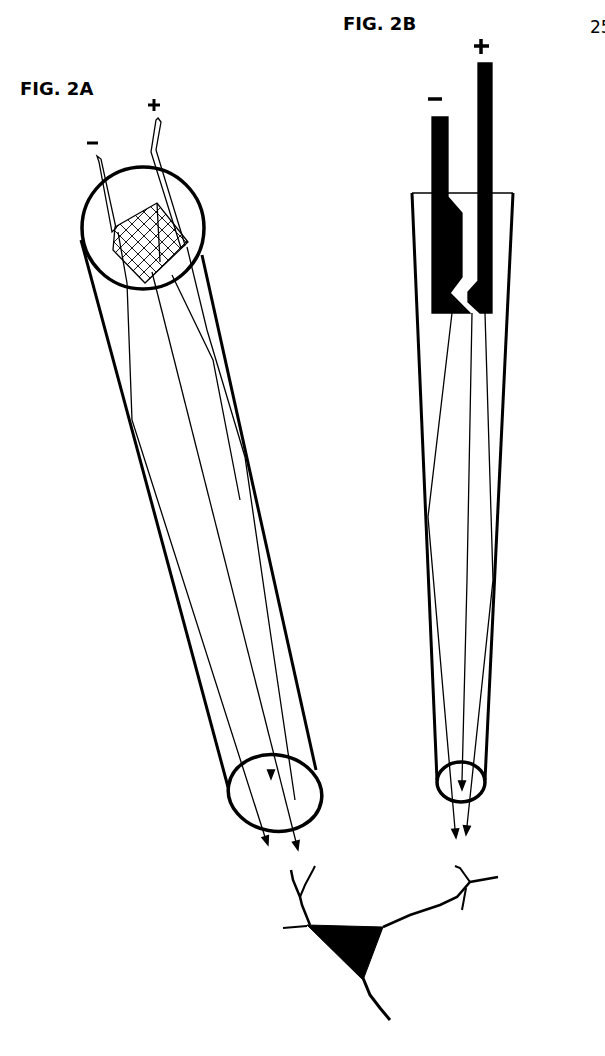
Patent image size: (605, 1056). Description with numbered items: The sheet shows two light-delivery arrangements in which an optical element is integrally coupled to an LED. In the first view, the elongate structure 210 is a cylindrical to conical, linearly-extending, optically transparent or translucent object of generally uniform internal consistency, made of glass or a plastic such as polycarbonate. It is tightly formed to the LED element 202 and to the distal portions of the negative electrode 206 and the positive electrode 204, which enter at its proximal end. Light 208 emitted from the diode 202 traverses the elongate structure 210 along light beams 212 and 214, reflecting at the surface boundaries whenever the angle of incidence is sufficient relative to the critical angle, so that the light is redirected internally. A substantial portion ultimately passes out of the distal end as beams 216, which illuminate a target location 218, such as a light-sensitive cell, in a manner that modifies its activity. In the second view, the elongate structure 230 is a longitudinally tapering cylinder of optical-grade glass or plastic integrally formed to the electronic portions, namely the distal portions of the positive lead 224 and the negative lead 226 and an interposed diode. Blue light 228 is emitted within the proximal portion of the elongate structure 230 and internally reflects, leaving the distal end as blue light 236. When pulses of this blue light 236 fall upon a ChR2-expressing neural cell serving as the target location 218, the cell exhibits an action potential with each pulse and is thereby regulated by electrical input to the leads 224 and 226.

In FIG. 2A, the LED element 202 is at (163, 212).
In FIG. 2A, the positive electrode 204 is at (163, 125).
In FIG. 2A, the negative electrode 206 is at (97, 160).
In FIG. 2A, the light 208 is at (128, 345).
In FIG. 2A, the elongate structure 210 is at (171, 503).
In FIG. 2A, the light beam 212 is at (132, 420).
In FIG. 2A, the light beam 214 is at (245, 457).
In FIG. 2A, the beams 216 is at (252, 782).
In FIG. 2A, the target location 218 is at (350, 918).
In FIG. 2B, the positive lead 224 is at (497, 140).
In FIG. 2B, the negative lead 226 is at (428, 142).
In FIG. 2B, the blue light 228 is at (433, 463).
In FIG. 2B, the elongate structure 230 is at (502, 233).
In FIG. 2B, the blue light 236 is at (515, 741).